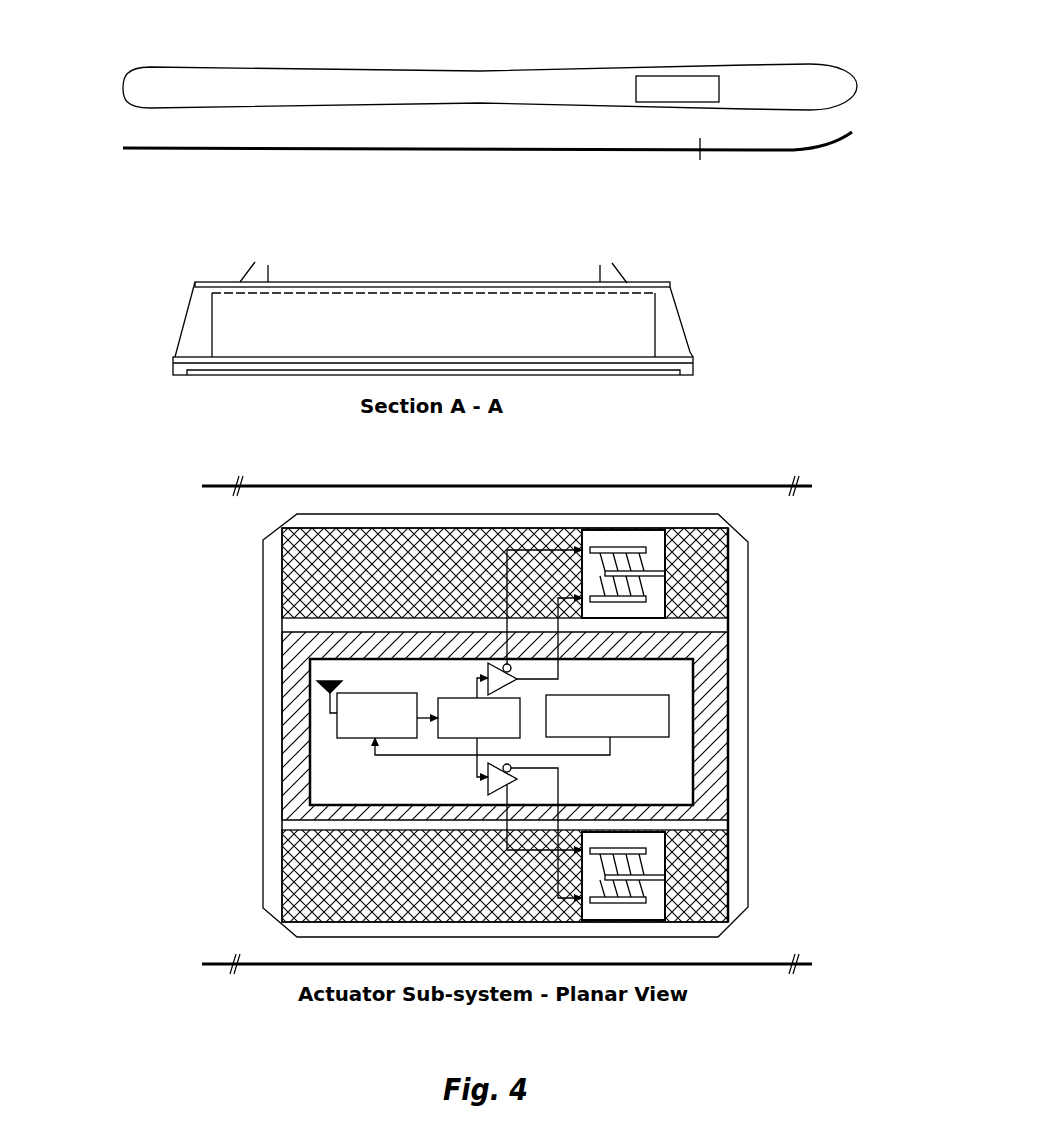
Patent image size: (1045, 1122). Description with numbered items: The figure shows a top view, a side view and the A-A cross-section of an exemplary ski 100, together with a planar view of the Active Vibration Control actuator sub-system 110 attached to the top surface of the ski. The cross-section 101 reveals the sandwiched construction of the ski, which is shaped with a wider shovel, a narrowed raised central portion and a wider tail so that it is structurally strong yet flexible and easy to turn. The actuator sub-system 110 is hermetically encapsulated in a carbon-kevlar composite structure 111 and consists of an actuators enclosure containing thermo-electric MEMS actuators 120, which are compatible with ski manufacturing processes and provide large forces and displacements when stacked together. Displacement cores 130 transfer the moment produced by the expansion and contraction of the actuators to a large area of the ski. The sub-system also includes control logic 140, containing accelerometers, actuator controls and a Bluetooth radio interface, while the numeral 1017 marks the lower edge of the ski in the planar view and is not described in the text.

The ski 100 is at (165, 92).
The actuator sub-system 110 is at (676, 88).
The cross-section 101 is at (248, 317).
The carbon-kevlar composite structure 111 is at (602, 271).
The thermo-electric MEMS actuators 120 is at (668, 543).
The displacement cores 130 is at (690, 850).
The control logic 140 is at (348, 767).
The ski edge 1017 is at (268, 960).